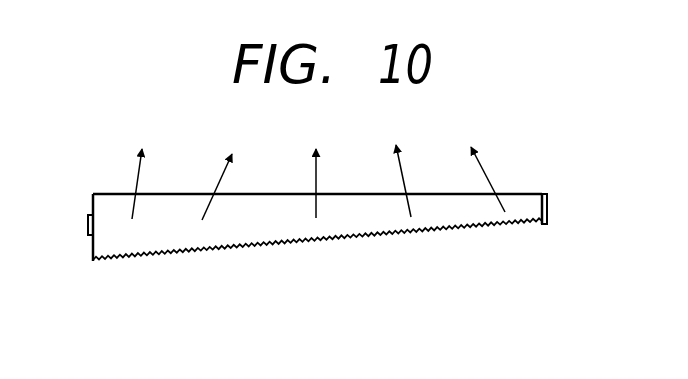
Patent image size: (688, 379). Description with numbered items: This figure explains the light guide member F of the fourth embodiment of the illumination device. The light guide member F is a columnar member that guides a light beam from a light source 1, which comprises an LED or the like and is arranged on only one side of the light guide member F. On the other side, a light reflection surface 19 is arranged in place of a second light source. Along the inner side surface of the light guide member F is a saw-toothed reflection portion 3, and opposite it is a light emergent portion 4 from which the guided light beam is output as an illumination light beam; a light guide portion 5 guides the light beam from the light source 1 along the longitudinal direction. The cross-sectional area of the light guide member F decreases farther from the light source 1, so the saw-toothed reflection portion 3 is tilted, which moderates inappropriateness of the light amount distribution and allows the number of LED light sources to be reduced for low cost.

The light source 1 is at (88, 225).
The saw-toothed reflection portion 3 is at (470, 234).
The light emergent portion 4 is at (108, 194).
The light guide portion 5 is at (528, 200).
The light reflection surface 19 is at (548, 211).
The light guide member F is at (230, 258).